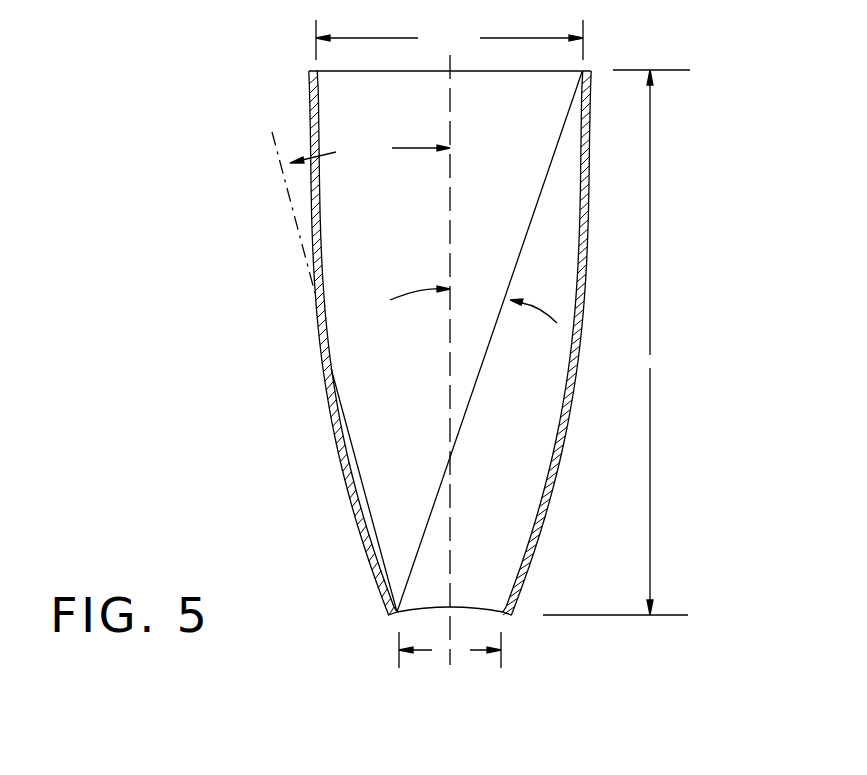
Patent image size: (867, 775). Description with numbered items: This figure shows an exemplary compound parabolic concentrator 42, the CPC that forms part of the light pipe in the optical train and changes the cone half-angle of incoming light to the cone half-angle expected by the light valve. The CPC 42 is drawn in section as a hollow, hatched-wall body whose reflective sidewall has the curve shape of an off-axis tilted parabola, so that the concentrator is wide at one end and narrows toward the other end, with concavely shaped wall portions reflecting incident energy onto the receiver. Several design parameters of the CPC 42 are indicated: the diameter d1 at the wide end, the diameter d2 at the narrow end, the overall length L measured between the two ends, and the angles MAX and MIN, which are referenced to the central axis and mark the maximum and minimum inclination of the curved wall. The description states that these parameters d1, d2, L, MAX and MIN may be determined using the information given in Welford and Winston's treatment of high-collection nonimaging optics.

The compound parabolic concentrator 42 is at (309, 103).
The d1 parameter d1 is at (449, 40).
The d2 parameter d2 is at (450, 649).
The L parameter L is at (616, 342).
The max parameter MAX is at (370, 152).
The min parameter MIN is at (473, 299).